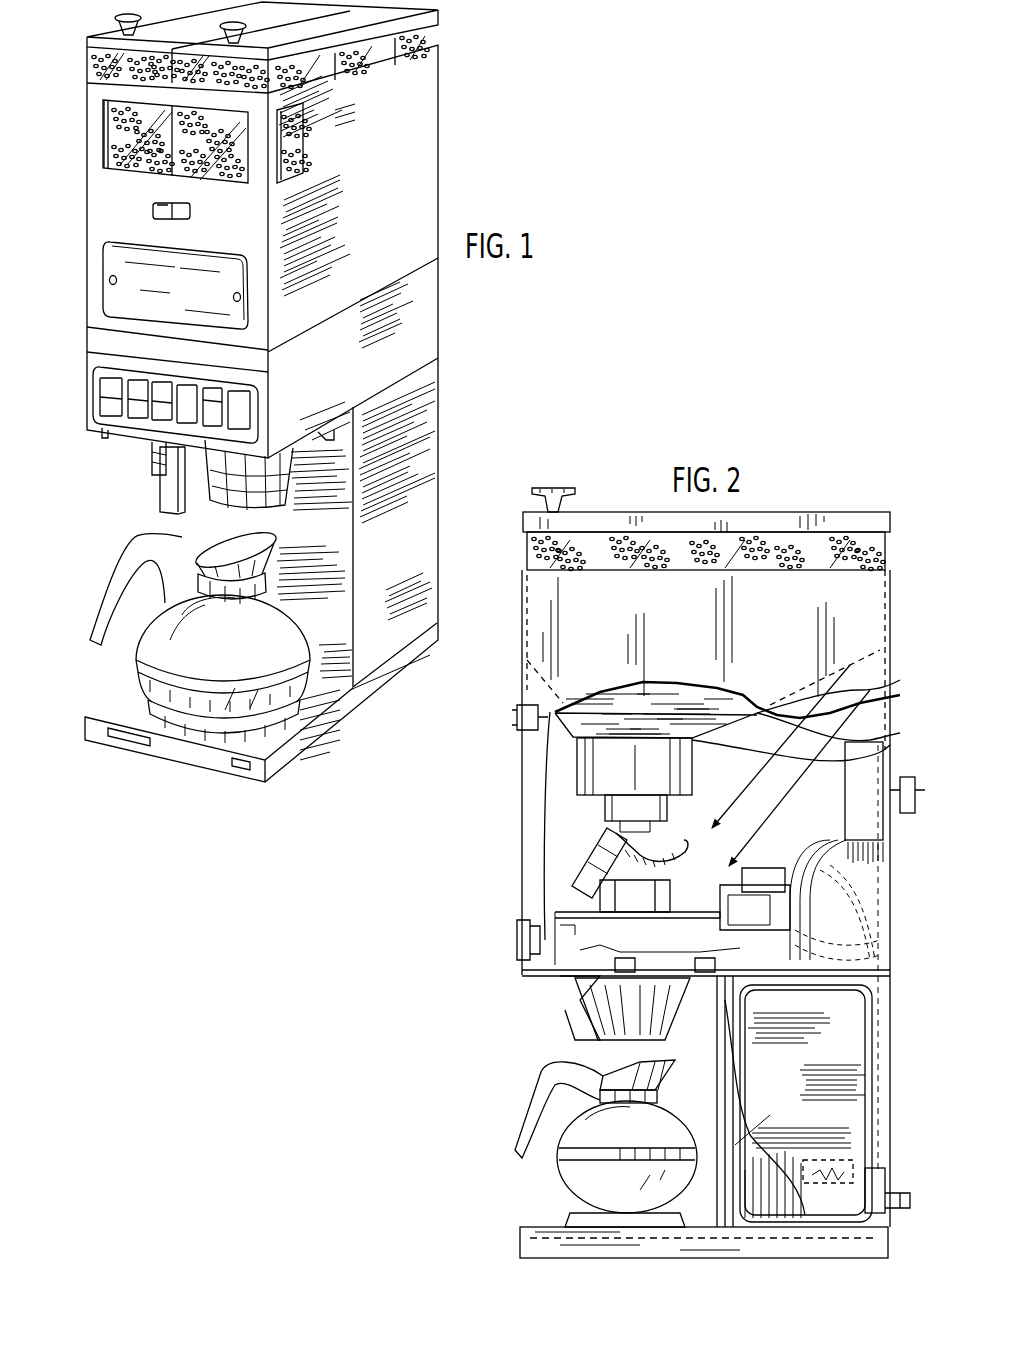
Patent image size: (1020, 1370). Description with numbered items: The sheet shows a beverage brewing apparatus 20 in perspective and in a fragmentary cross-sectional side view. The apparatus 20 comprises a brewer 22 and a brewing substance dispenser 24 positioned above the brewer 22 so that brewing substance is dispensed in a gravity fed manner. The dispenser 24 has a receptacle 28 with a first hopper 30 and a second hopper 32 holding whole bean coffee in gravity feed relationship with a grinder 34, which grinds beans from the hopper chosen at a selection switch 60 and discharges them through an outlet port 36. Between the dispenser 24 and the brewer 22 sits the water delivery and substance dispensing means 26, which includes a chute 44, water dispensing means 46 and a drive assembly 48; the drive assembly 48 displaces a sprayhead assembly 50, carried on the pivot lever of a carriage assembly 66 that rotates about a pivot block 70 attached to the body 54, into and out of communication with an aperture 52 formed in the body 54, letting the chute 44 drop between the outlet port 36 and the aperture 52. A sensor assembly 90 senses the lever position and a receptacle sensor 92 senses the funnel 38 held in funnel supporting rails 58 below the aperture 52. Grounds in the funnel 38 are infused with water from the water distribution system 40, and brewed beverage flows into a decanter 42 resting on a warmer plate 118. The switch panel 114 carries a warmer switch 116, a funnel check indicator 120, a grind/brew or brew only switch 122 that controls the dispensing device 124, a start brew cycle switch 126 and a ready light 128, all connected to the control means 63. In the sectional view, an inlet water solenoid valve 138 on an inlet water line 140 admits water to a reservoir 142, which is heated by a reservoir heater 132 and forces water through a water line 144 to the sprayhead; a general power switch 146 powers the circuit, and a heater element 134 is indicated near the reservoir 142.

In FIG. 1, the beverage brewing apparatus 20 is at (522, 124).
In FIG. 2, the beverage brewing apparatus 20 is at (382, 934).
In FIG. 1, the brewer 22 is at (450, 376).
In FIG. 2, the brewer 22 is at (486, 1128).
In FIG. 1, the brewing substance dispenser 24 is at (442, 172).
In FIG. 2, the brewing substance dispenser 24 is at (500, 748).
In FIG. 2, the water delivery and substance dispensing means 26 is at (556, 836).
In FIG. 1, the receptacle 28 is at (86, 62).
In FIG. 1, the first hopper 30 is at (106, 112).
In FIG. 1, the second hopper 32 is at (104, 140).
In FIG. 2, the second hopper 32 is at (526, 548).
In FIG. 2, the grinder 34 is at (594, 762).
In FIG. 2, the outlet port 36 is at (612, 808).
In FIG. 1, the funnel 38 is at (181, 487).
In FIG. 2, the funnel 38 is at (590, 1034).
In FIG. 2, the water distribution system 40 is at (882, 1040).
In FIG. 1, the decanter 42 is at (128, 657).
In FIG. 2, the decanter 42 is at (556, 1176).
In FIG. 2, the chute 44 is at (606, 843).
In FIG. 2, the water dispensing means 46 is at (830, 730).
In FIG. 2, the drive assembly 48 is at (840, 745).
In FIG. 2, the sprayhead assembly 50 is at (576, 906).
In FIG. 2, the aperture 52 is at (700, 960).
In FIG. 2, the body 54 is at (622, 966).
In FIG. 1, the funnel supporting rails 58 is at (100, 436).
In FIG. 2, the funnel supporting rails 58 is at (562, 968).
In FIG. 1, the selection switch 60 is at (153, 210).
In FIG. 2, the selection switch 60 is at (516, 712).
In FIG. 2, the control means 63 is at (866, 800).
In FIG. 2, the carriage assembly 66 is at (612, 872).
In FIG. 2, the pivot block 70 is at (600, 900).
In FIG. 2, the sensor assembly 90 is at (766, 880).
In FIG. 2, the receptacle sensor 92 is at (592, 1030).
In FIG. 1, the switch panel 114 is at (146, 385).
In FIG. 2, the switch panel 114 is at (502, 944).
In FIG. 1, the warmer switch 116 is at (93, 370).
In FIG. 1, the warmer plate 118 is at (166, 720).
In FIG. 1, the funnel check indicator 120 is at (138, 382).
In FIG. 1, the grind/brew or brew only switch 122 is at (160, 384).
In FIG. 1, the dispensing device 124 is at (187, 430).
In FIG. 1, the start brew cycle switch 126 is at (162, 485).
In FIG. 1, the ready light 128 is at (240, 440).
In FIG. 2, the reservoir heater 132 is at (792, 1230).
In FIG. 2, the heater element 134 is at (828, 1171).
In FIG. 2, the inlet water solenoid valve 138 is at (873, 1193).
In FIG. 2, the inlet water line 140 is at (897, 1210).
In FIG. 2, the reservoir 142 is at (762, 1228).
In FIG. 2, the water line 144 is at (544, 830).
In FIG. 2, the general power switch 146 is at (910, 776).